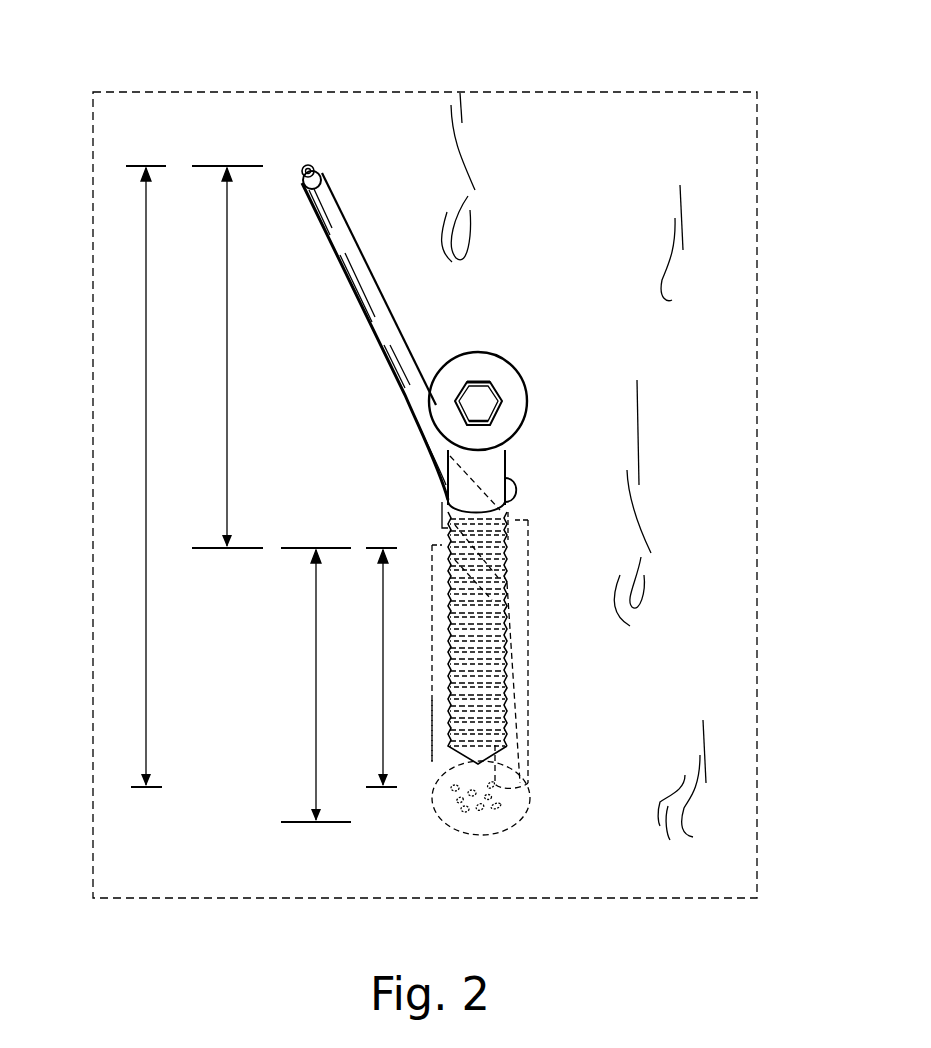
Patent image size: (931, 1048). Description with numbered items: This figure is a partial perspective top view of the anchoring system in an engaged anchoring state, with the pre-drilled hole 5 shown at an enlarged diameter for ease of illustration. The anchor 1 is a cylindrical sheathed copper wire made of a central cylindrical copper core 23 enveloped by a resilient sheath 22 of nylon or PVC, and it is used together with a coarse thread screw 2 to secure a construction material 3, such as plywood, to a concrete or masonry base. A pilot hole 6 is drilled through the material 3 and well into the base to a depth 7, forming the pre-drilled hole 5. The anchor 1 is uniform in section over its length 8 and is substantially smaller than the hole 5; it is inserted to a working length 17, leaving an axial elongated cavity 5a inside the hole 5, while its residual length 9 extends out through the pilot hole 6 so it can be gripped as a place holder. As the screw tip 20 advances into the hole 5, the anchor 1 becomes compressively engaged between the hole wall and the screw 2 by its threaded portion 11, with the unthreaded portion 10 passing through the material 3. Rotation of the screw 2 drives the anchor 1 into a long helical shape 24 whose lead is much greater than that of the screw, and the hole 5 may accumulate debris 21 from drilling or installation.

The anchor 1 is at (375, 260).
The coarse thread screw 2 is at (490, 352).
The construction material 3 is at (700, 120).
The pre-drilled hole 5 is at (530, 582).
The elongated cavity 5a is at (432, 723).
The pilot hole 6 is at (514, 490).
The depth 7 is at (316, 685).
The length 8 is at (143, 476).
The residual length 9 is at (227, 357).
The unthreaded portion 10 is at (505, 455).
The threaded portion 11 is at (490, 673).
The working length 17 is at (372, 667).
The screw tip 20 is at (478, 766).
The debris 21 is at (497, 817).
The resilient sheath 22 is at (367, 262).
The central cylindrical copper core 23 is at (309, 165).
The long helical shape 24 is at (515, 733).